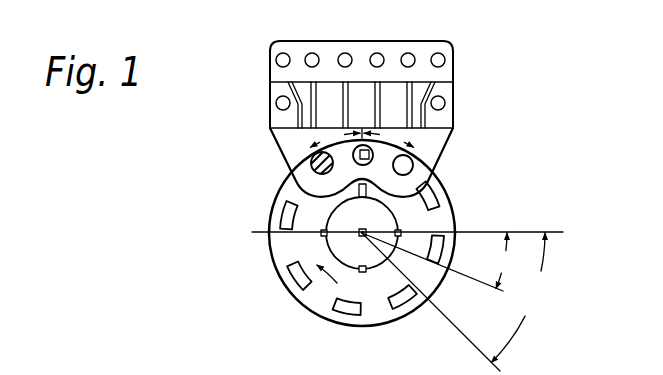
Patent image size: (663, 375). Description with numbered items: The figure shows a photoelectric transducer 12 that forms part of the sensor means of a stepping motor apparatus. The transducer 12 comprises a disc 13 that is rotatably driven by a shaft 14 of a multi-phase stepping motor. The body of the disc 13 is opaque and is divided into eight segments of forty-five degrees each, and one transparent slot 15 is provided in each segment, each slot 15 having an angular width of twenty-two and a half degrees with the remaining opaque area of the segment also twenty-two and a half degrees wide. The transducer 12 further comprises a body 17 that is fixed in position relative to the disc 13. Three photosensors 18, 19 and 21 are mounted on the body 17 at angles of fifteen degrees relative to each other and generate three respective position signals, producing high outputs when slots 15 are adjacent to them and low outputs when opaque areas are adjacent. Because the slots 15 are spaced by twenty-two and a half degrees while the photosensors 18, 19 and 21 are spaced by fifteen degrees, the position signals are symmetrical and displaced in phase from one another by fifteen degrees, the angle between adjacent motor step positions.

The photoelectric transducer 12 is at (214, 158).
The disc 13 is at (457, 225).
The shaft 14 is at (366, 230).
The transparent slots 15 is at (340, 309).
The body 17 is at (455, 50).
The photosensor 18 is at (352, 152).
The photosensor 19 is at (311, 163).
The photosensor 21 is at (414, 166).